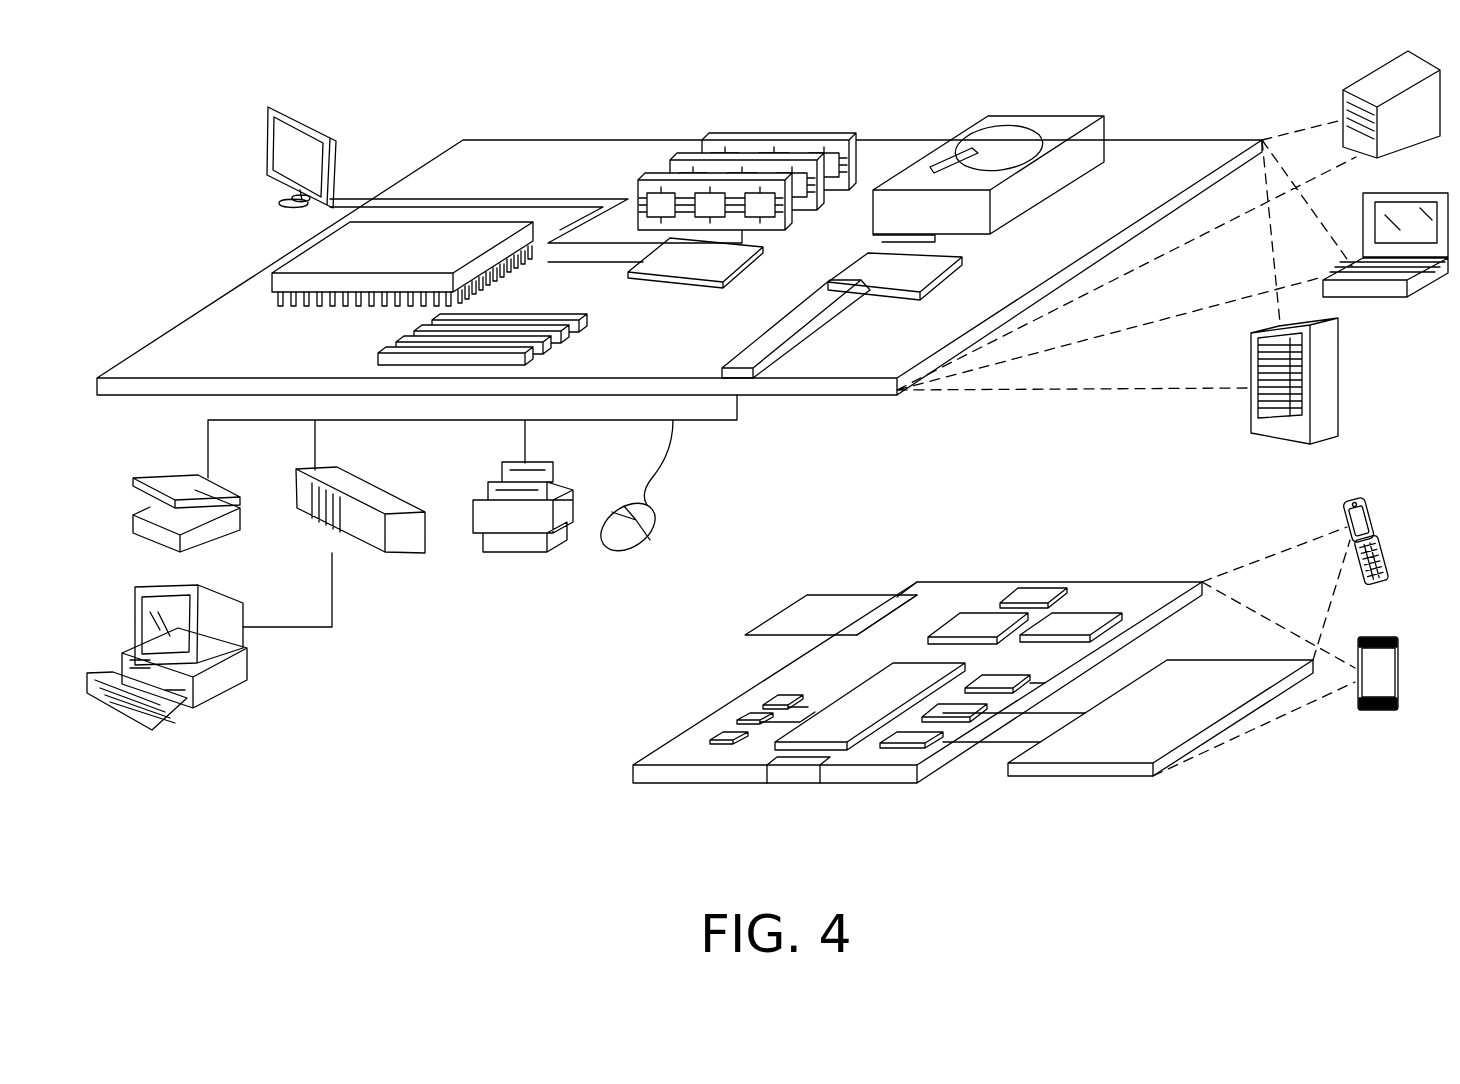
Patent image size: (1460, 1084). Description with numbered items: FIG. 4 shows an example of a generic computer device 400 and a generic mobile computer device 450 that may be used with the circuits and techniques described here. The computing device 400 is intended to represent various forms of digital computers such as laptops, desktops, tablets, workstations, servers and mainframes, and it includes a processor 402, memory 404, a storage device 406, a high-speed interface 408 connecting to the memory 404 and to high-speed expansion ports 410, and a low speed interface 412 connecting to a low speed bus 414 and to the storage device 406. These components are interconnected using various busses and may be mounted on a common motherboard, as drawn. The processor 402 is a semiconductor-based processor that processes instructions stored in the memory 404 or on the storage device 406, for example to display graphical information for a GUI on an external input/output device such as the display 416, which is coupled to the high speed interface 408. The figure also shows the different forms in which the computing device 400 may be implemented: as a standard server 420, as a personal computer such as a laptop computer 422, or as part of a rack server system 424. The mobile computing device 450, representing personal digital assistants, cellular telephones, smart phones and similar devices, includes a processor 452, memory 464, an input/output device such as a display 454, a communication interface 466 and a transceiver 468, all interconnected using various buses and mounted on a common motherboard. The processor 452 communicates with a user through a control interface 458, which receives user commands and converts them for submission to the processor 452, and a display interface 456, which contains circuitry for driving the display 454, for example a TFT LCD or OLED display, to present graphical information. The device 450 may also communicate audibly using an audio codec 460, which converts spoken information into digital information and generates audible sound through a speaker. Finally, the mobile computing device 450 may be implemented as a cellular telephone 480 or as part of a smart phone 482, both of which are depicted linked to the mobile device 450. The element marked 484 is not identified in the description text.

The computing device 400 is at (405, 82).
The processor 402 is at (297, 251).
The memory 404 is at (781, 132).
The storage device 406 is at (1032, 112).
The high-speed interface 408 is at (712, 270).
The high-speed expansion ports 410 is at (402, 334).
The low speed interface 412 is at (866, 258).
The low speed bus 414 is at (745, 363).
The display 416 is at (276, 106).
The standard server 420 is at (1364, 80).
The laptop computer 422 is at (1423, 194).
The rack server system 424 is at (1340, 385).
The mobile computer device 450 is at (618, 732).
The processor 452 is at (833, 713).
The display 454 is at (1200, 673).
The display interface 456 is at (925, 740).
The control interface 458 is at (970, 712).
The audio codec 460 is at (1008, 675).
The memory 464 is at (740, 712).
The communication interface 466 is at (962, 617).
The transceiver 468 is at (1082, 617).
The cellular telephone 480 is at (1035, 588).
The smart phone 482 is at (897, 597).
The battery 484 is at (807, 597).